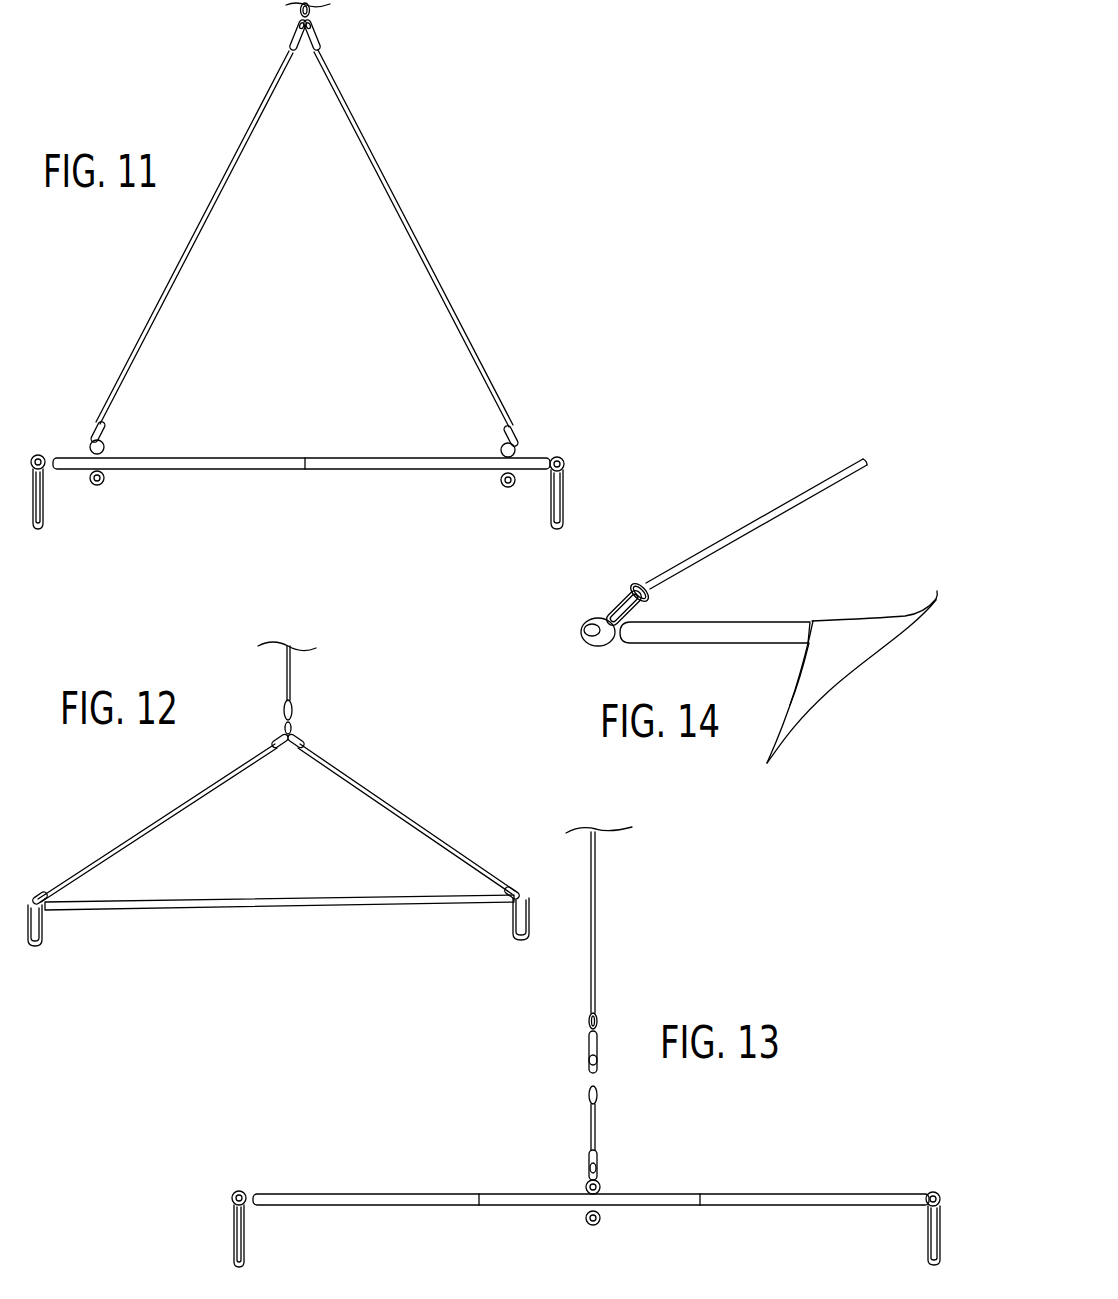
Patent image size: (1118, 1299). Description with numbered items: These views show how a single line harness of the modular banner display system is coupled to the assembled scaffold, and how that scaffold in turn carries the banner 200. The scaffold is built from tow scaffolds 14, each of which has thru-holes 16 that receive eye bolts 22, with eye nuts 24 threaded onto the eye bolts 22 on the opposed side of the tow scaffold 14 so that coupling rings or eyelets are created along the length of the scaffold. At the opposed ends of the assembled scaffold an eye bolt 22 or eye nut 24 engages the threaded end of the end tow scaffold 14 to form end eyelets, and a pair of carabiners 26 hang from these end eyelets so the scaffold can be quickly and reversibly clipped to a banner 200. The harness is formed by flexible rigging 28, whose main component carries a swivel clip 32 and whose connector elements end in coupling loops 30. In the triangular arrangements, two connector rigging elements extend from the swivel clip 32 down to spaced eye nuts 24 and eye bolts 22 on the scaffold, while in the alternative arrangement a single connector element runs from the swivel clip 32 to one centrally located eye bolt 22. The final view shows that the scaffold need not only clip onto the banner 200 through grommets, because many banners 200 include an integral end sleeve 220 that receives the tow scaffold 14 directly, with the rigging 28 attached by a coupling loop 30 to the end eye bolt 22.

In FIG. 11, the tow scaffold 14 is at (238, 456).
In FIG. 12, the tow scaffold 14 is at (298, 902).
In FIG. 14, the tow scaffold 14 is at (702, 646).
In FIG. 13, the tow scaffold 14 is at (662, 1192).
In FIG. 11, the thru-hole 16 is at (430, 456).
In FIG. 14, the thru-hole 16 is at (716, 622).
In FIG. 13, the thru-hole 16 is at (383, 1191).
In FIG. 11, the eye bolt 22 is at (106, 447).
In FIG. 14, the eye bolt 22 is at (586, 638).
In FIG. 13, the eye bolt 22 is at (930, 1189).
In FIG. 11, the eye nut 24 is at (43, 454).
In FIG. 13, the eye nut 24 is at (239, 1188).
In FIG. 11, the carabiner 26 is at (72, 520).
In FIG. 12, the carabiner 26 is at (44, 934).
In FIG. 13, the carabiner 26 is at (240, 1256).
In FIG. 11, the flexible rigging element 28 is at (165, 306).
In FIG. 12, the flexible rigging element 28 is at (284, 680).
In FIG. 14, the flexible rigging element 28 is at (764, 520).
In FIG. 13, the flexible rigging element 28 is at (594, 948).
In FIG. 11, the coupling loop 30 is at (292, 42).
In FIG. 12, the coupling loop 30 is at (276, 746).
In FIG. 14, the coupling loop 30 is at (640, 584).
In FIG. 13, the coupling loop 30 is at (586, 1062).
In FIG. 11, the swivel clip 32 is at (300, 14).
In FIG. 12, the swivel clip 32 is at (294, 724).
In FIG. 13, the swivel clip 32 is at (590, 1042).
In FIG. 14, the banner 200 is at (858, 652).
In FIG. 14, the integral end sleeve 220 is at (801, 648).